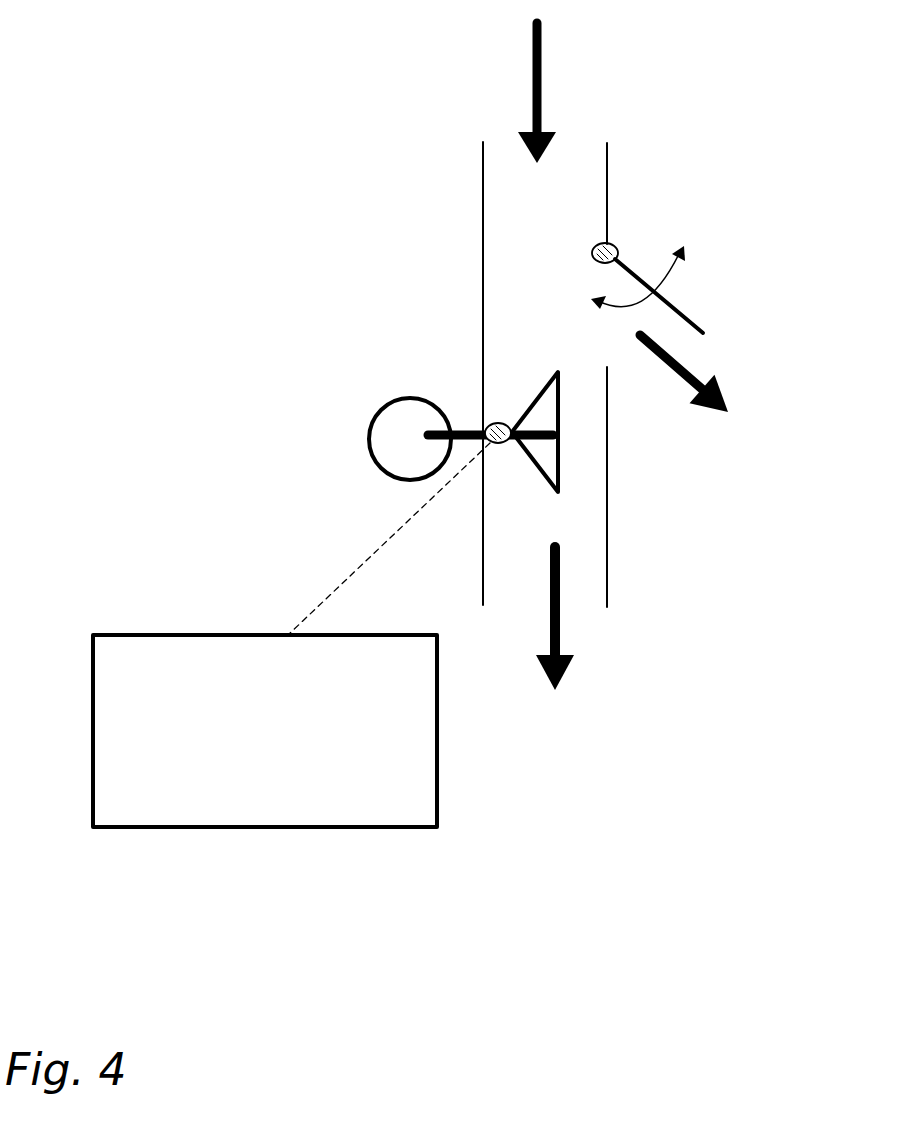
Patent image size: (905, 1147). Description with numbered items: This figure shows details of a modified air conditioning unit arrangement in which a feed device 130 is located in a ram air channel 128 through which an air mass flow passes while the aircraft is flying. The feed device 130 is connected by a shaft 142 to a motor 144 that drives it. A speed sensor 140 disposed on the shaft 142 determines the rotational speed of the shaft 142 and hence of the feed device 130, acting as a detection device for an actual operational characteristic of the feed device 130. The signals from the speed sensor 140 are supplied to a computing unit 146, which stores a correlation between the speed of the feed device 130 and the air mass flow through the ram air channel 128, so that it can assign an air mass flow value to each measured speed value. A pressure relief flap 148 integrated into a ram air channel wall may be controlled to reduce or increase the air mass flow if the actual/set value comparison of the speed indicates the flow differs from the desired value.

The ram air channel 128 is at (608, 153).
The feed device 130 is at (546, 407).
The speed sensor 140 is at (505, 445).
The shaft 142 is at (460, 425).
The motor 144 is at (390, 450).
The computing unit 146 is at (291, 635).
The pressure relief flap 148 is at (688, 312).